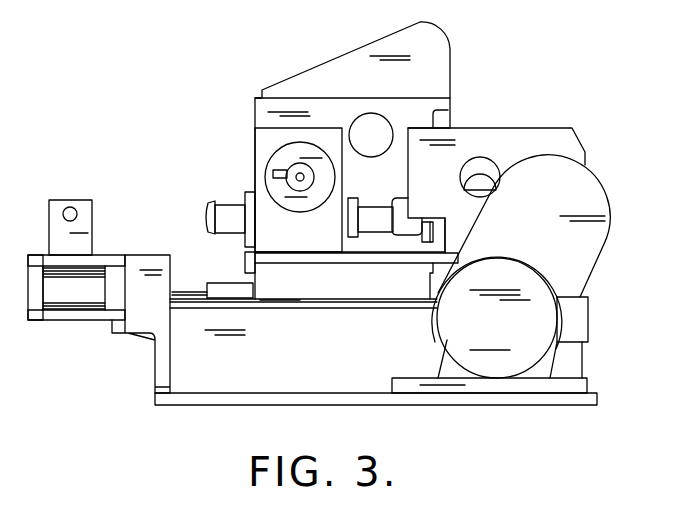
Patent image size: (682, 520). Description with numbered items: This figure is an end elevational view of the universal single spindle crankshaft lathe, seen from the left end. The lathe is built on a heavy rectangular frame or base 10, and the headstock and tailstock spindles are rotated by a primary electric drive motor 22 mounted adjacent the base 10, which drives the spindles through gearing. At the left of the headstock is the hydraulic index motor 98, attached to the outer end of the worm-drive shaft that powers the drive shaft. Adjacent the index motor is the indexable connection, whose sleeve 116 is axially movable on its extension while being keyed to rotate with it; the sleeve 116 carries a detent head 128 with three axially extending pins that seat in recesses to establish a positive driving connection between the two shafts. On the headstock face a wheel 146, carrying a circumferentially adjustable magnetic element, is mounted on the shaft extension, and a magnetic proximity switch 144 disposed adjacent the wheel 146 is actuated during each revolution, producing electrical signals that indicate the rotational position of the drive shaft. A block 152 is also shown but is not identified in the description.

The base 10 is at (332, 356).
The primary electric drive motor 22 is at (511, 330).
The hydraulic index motor 98 is at (230, 232).
The sleeve 116 is at (376, 212).
The detent head 128 is at (71, 306).
The magnetic proximity switch 144 is at (268, 169).
The wheel 146 is at (305, 187).
The mounting block 152 is at (60, 204).